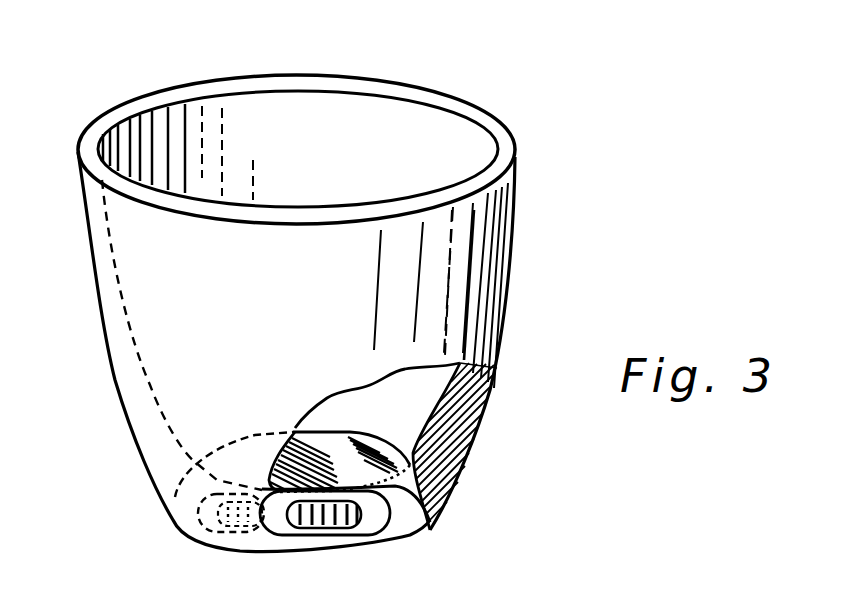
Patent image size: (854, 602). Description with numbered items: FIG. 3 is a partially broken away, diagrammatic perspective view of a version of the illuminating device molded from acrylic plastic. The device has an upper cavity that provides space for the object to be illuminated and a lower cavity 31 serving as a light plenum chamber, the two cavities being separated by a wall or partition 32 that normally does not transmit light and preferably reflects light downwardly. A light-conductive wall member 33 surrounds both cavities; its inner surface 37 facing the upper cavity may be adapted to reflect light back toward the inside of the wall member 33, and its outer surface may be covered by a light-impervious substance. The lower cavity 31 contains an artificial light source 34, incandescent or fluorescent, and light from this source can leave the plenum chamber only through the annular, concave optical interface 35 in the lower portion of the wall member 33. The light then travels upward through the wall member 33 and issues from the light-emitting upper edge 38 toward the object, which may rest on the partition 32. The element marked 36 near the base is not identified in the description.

The cup body 31 is at (404, 532).
The broken-away base fragment 32 is at (337, 440).
The wall cross-section 33 is at (468, 423).
The ribbed boss 34 is at (306, 536).
The inner wall edge 35 is at (460, 487).
The base ring 36 is at (450, 505).
The inner wall (hidden) 37 is at (140, 337).
The rim 38 is at (167, 97).